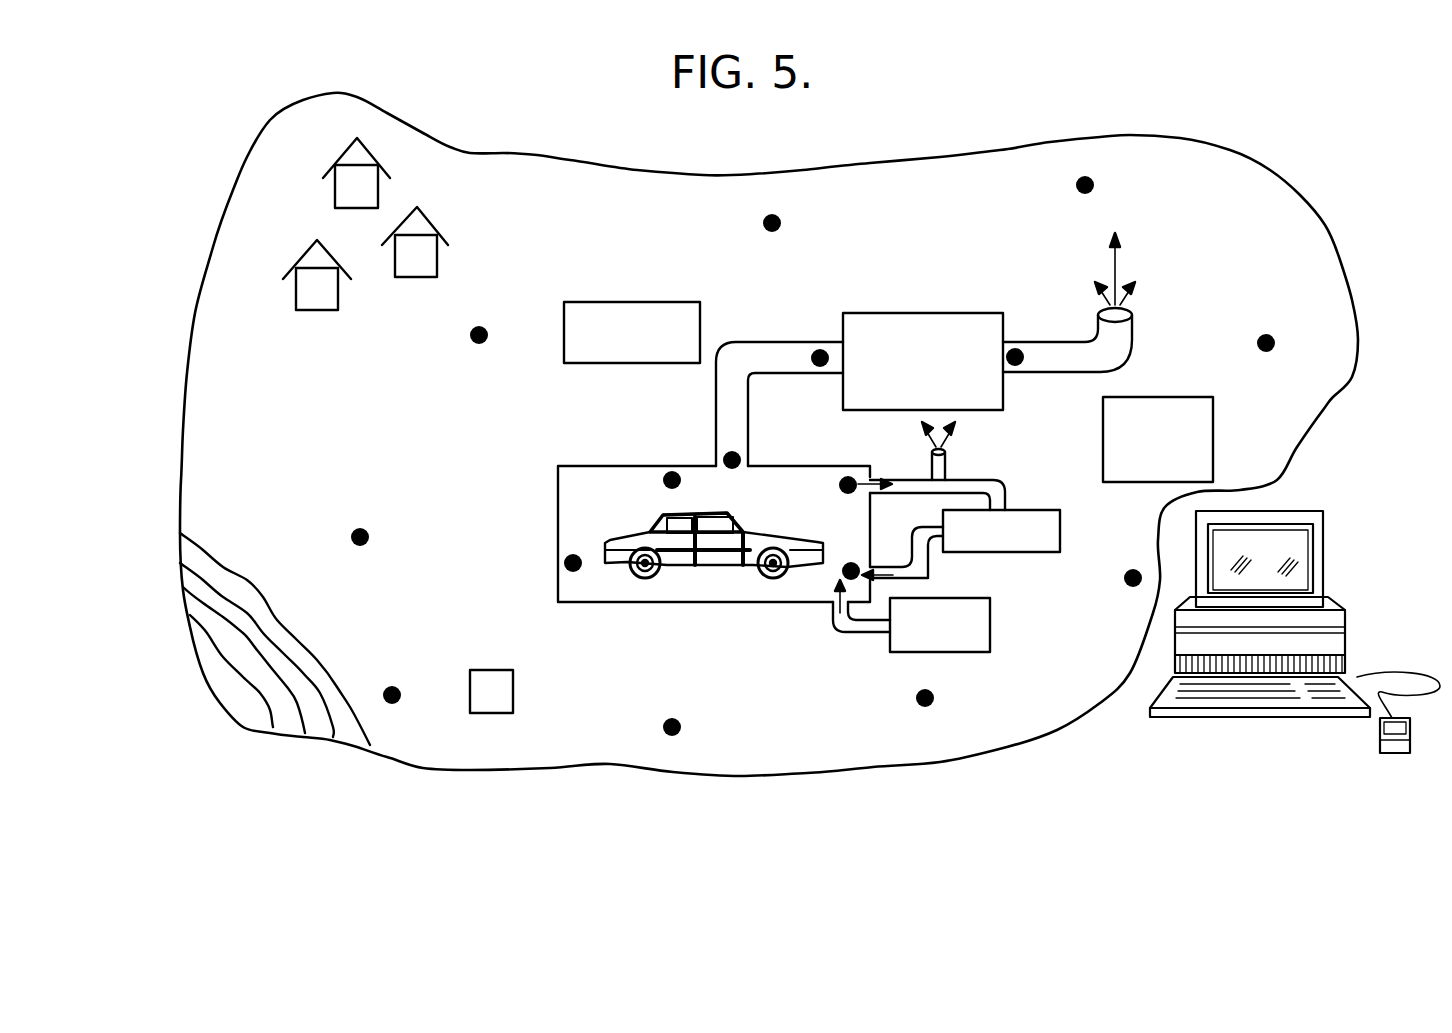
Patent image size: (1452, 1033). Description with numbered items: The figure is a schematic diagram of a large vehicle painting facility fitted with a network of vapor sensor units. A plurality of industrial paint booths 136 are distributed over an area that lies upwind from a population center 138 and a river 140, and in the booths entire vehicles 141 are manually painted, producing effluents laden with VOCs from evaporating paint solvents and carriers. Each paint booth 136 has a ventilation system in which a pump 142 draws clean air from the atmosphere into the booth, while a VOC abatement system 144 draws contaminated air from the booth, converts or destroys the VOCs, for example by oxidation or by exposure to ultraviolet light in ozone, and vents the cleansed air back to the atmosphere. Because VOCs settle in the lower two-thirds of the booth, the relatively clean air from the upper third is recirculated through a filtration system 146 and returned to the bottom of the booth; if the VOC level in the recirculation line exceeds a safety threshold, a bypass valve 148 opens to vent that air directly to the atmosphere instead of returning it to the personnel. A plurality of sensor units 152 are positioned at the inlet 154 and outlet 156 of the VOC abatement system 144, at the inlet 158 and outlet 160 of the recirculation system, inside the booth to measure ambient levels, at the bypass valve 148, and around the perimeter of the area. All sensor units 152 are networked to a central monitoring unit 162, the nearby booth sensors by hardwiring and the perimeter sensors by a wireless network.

The industrial paint booth 136 is at (700, 302).
The population center 138 is at (430, 170).
The river 140 is at (203, 587).
The vehicle 141 is at (625, 533).
The pump 142 is at (990, 624).
The VOC abatement system 144 is at (970, 313).
The filtration system 146 is at (1050, 510).
The bypass valve 148 is at (943, 470).
The sensor unit 152 is at (487, 327).
The inlet of the VOC abatement system 154 is at (826, 340).
The outlet of the VOC abatement system 156 is at (1008, 338).
The inlet of the recirculation system 158 is at (880, 476).
The outlet of the recirculation system 160 is at (888, 584).
The central monitoring unit 162 is at (1292, 510).